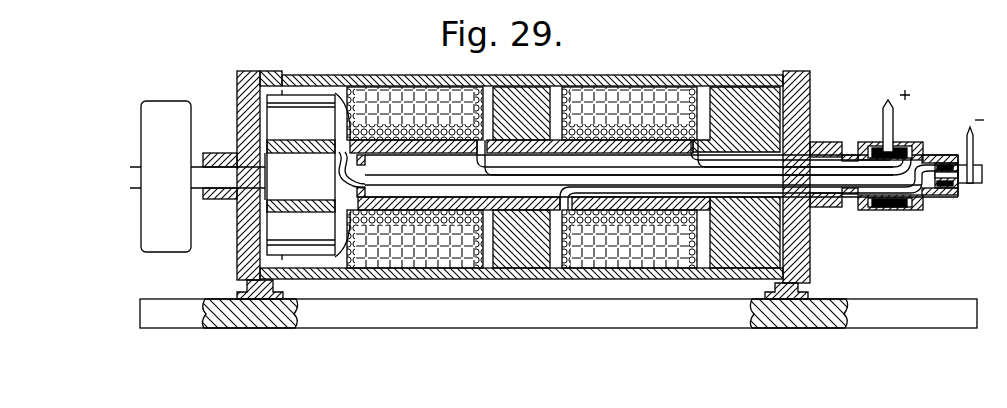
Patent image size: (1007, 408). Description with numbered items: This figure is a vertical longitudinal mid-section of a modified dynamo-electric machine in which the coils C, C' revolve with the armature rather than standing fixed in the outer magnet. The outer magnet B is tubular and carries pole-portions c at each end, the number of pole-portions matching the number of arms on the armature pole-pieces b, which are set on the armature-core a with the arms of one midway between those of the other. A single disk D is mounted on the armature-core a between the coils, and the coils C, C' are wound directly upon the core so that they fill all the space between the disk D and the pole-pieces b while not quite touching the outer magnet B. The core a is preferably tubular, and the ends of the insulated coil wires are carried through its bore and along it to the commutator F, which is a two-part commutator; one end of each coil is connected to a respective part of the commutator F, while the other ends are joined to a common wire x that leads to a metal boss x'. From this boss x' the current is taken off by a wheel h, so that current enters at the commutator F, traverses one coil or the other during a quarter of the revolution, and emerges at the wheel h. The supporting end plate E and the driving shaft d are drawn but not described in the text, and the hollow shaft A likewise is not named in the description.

The end plate / bearing standard E is at (236, 121).
The driving shaft d is at (197, 176).
The pole-pieces b is at (316, 175).
The magnet B is at (535, 172).
The pole-portions c is at (309, 78).
The coil C is at (415, 177).
The coil C' is at (629, 177).
The disk D is at (636, 177).
The hollow shaft A is at (661, 176).
The armature-core a is at (682, 160).
The common wire x is at (759, 187).
The commutator F is at (914, 142).
The metal boss x' is at (977, 172).
The wheel h is at (979, 151).